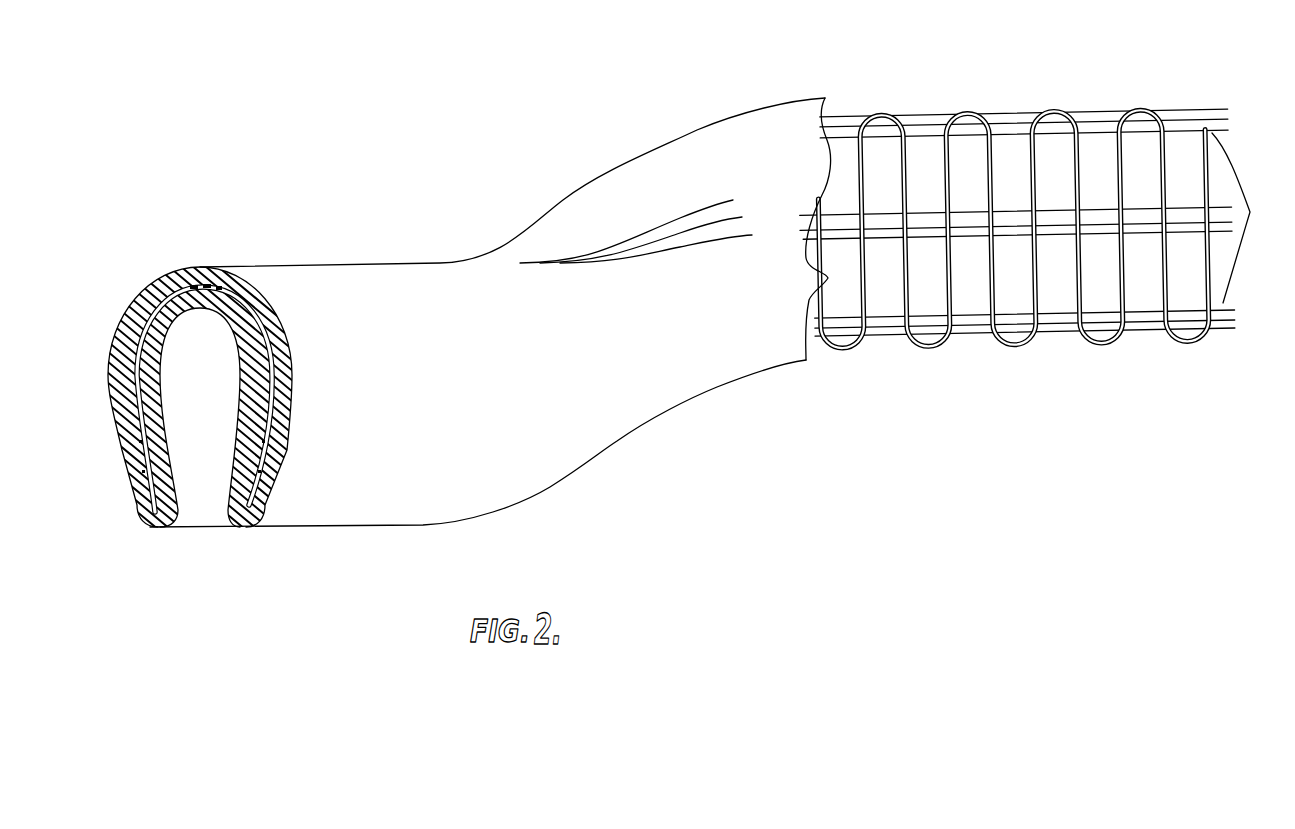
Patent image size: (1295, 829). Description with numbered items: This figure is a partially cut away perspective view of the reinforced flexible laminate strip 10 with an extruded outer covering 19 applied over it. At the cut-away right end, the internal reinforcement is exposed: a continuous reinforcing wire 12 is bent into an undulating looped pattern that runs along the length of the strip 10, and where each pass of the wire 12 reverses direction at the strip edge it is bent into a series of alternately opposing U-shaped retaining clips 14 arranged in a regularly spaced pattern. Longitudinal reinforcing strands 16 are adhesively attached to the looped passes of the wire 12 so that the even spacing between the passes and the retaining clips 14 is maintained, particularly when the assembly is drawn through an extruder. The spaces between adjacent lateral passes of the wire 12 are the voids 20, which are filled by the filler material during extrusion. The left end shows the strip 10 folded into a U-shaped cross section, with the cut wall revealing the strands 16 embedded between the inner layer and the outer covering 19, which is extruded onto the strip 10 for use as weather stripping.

The flexible laminate strip 10 is at (542, 177).
The reinforcing wire 12 is at (240, 300).
The U-shaped retaining clips 14 is at (1057, 112).
The longitudinal reinforcing strand 16 is at (197, 288).
The outer covering 19 is at (627, 383).
The voids 20 is at (883, 152).